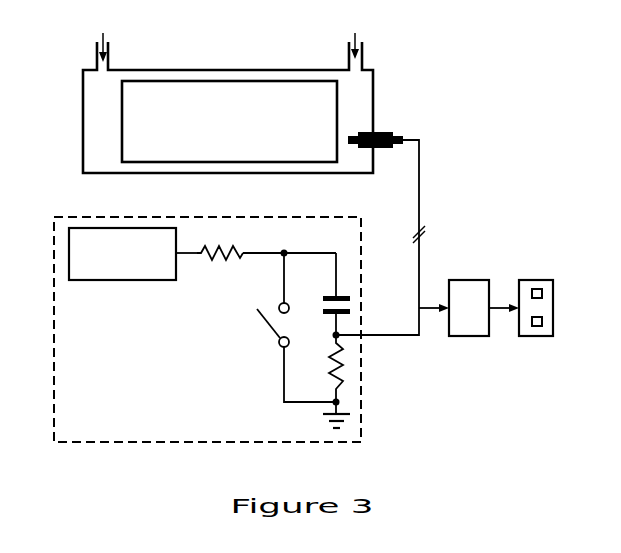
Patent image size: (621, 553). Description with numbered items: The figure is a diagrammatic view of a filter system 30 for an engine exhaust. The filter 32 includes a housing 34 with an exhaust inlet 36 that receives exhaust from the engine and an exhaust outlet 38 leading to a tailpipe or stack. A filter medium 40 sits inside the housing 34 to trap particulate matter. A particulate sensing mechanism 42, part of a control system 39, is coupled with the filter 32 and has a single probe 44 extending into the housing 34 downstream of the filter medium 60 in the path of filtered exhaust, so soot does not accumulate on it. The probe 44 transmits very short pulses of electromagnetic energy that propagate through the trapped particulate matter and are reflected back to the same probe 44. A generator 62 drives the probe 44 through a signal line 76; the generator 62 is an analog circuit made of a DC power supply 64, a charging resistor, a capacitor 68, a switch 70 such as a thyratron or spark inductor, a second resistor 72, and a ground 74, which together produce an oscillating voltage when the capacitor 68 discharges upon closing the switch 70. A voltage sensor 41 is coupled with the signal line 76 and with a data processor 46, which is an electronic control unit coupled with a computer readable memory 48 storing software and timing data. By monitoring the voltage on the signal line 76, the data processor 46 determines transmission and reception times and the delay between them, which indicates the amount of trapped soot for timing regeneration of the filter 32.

The filter system 30 is at (514, 112).
The filter 32 is at (60, 196).
The housing 34 is at (233, 174).
The exhaust inlet 36 is at (96, 49).
The exhaust outlet 38 is at (364, 47).
The filter medium 40 is at (237, 88).
The probe 44 is at (382, 133).
The signal line 76 is at (420, 180).
The voltage sensor 41 is at (469, 280).
The control system 39 is at (581, 274).
The data processor 46 is at (537, 289).
The computer readable memory 48 is at (537, 327).
The particulate sensing mechanism 42 is at (433, 391).
The generator 62 is at (118, 443).
The DC power supply 64 is at (118, 280).
The filter medium 60 is at (232, 256).
The switch 70 is at (278, 342).
The capacitor 68 is at (351, 298).
The second resistor 72 is at (344, 362).
The ground 74 is at (344, 418).